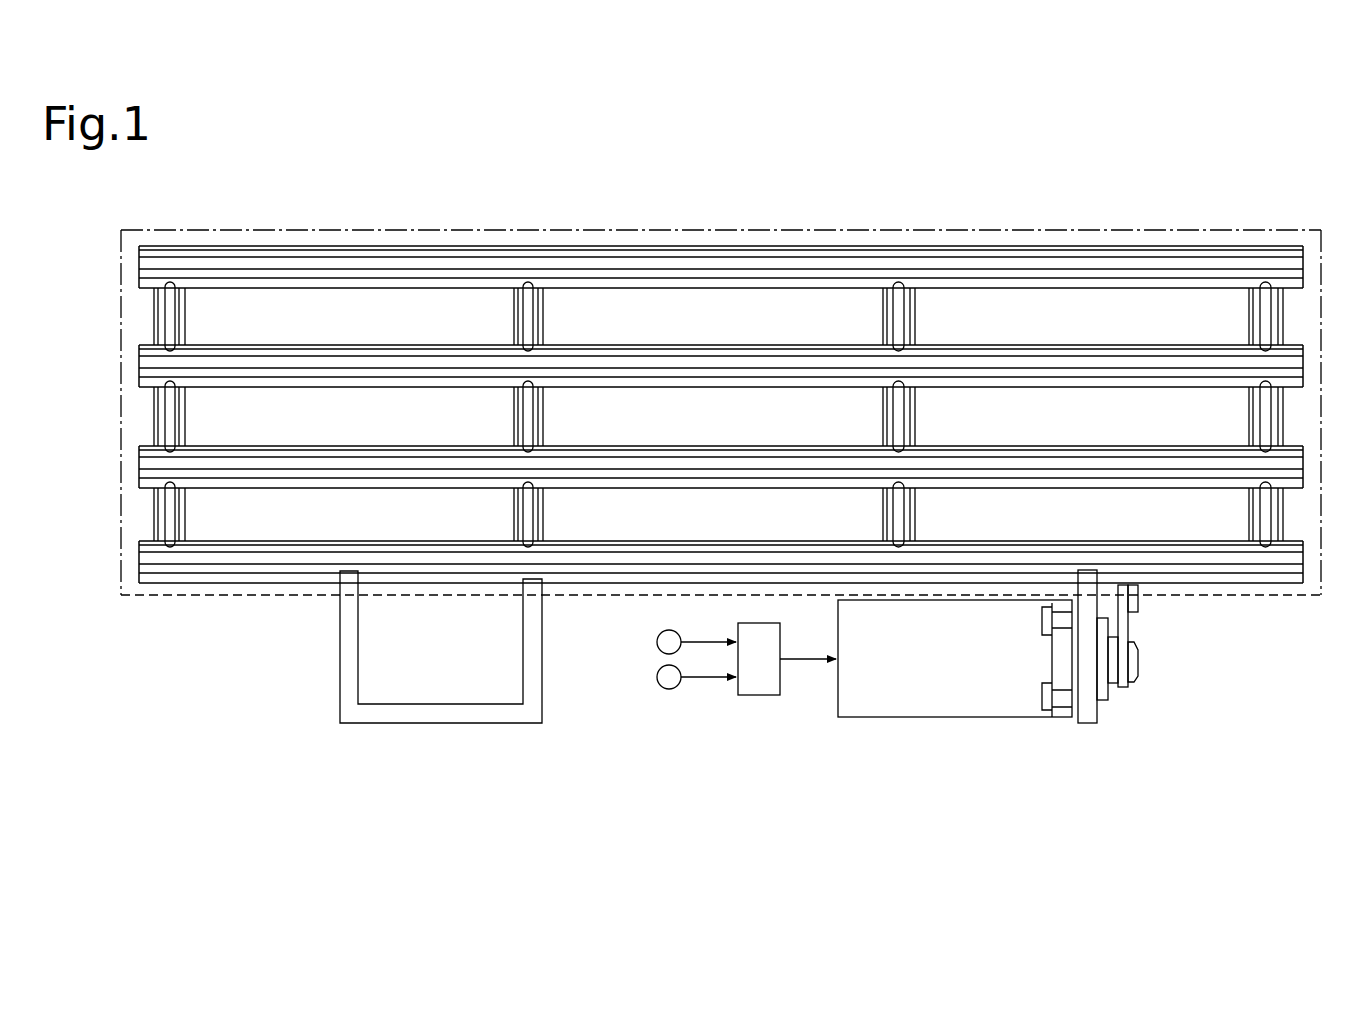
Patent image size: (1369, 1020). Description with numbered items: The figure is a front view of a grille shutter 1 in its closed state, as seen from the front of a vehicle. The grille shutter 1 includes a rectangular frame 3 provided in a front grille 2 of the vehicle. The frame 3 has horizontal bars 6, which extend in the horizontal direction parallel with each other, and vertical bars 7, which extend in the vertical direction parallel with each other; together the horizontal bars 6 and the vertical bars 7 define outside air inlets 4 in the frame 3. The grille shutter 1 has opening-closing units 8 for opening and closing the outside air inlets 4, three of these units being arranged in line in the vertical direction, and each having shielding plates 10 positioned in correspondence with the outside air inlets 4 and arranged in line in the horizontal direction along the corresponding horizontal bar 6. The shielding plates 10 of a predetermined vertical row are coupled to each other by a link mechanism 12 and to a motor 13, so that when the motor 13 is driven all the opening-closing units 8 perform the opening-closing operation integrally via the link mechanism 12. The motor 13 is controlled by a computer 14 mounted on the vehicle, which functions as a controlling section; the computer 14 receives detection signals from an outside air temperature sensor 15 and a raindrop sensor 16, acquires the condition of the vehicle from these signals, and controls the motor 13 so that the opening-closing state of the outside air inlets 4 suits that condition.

The grille shutter 1 is at (1294, 242).
The front grille 2 is at (121, 290).
The frame 3 is at (1305, 572).
The outside air inlets 4 is at (296, 392).
The horizontal bars 6 is at (674, 303).
The vertical bars 7 is at (187, 419).
The opening-closing units 8 is at (721, 426).
The shielding plates 10 is at (721, 426).
The link mechanism 12 is at (1133, 614).
The motor 13 is at (960, 718).
The computer 14 is at (762, 697).
The outside air temperature sensor 15 is at (656, 642).
The raindrop sensor 16 is at (656, 677).